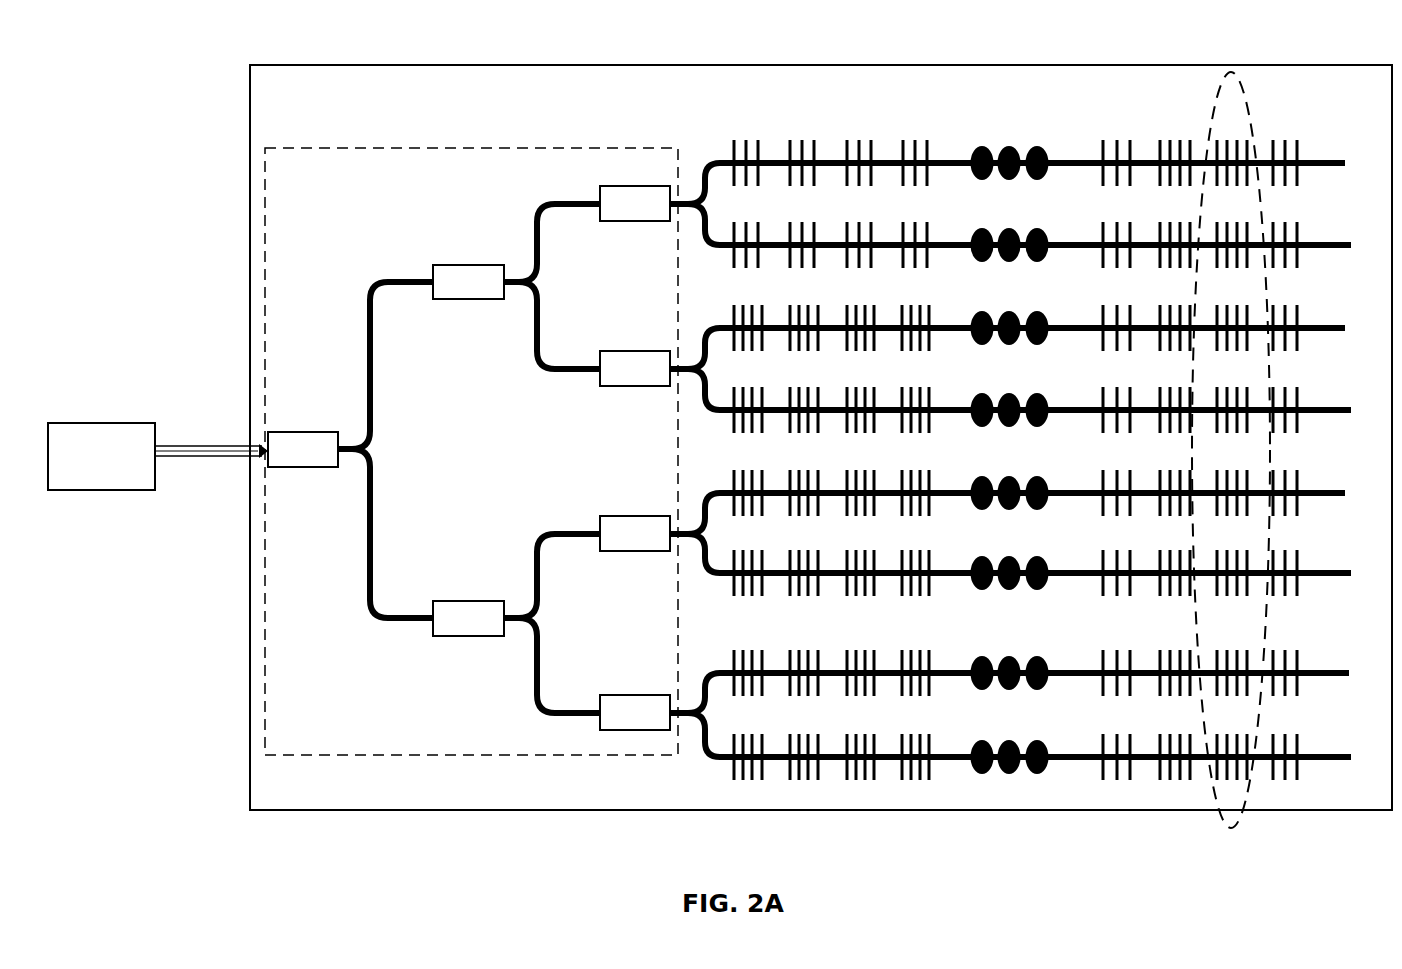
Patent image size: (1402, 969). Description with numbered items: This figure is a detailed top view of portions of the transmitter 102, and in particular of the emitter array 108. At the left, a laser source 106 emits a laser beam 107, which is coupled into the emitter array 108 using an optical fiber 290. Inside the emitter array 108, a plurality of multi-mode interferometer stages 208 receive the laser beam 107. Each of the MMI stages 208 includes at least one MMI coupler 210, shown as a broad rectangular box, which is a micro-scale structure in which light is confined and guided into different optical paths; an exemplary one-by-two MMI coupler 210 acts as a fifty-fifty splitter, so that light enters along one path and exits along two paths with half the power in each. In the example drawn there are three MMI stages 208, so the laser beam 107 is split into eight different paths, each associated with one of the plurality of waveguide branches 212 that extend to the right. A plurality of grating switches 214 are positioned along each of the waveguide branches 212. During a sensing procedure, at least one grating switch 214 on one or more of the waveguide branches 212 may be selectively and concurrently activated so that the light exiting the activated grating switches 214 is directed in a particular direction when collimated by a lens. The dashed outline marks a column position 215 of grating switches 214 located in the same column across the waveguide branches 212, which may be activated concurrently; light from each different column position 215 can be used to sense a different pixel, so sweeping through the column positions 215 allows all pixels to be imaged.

The transmitter 102 is at (63, 48).
The laser source 106 is at (100, 423).
The laser beam 107 is at (180, 446).
The emitter array 108 is at (325, 114).
The multi-mode interferometer (MMI) stages 208 is at (363, 210).
The MMI coupler 210 is at (297, 432).
The waveguide branches 212 is at (1322, 157).
The grating switches 214 is at (1120, 138).
The column position 215 is at (1226, 824).
The optical fiber 290 is at (208, 458).